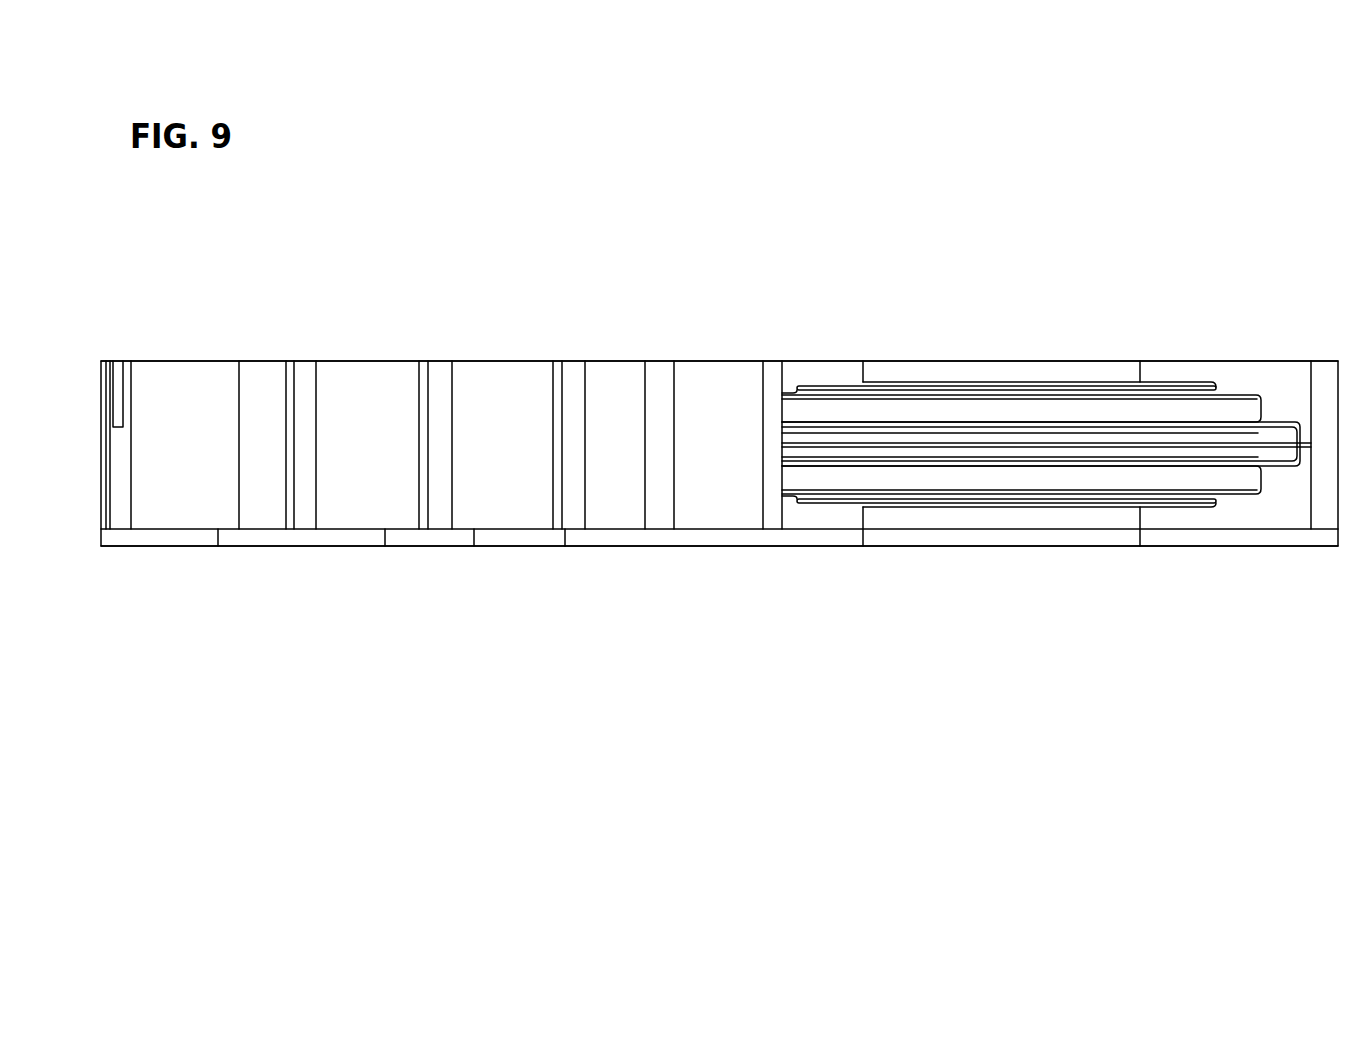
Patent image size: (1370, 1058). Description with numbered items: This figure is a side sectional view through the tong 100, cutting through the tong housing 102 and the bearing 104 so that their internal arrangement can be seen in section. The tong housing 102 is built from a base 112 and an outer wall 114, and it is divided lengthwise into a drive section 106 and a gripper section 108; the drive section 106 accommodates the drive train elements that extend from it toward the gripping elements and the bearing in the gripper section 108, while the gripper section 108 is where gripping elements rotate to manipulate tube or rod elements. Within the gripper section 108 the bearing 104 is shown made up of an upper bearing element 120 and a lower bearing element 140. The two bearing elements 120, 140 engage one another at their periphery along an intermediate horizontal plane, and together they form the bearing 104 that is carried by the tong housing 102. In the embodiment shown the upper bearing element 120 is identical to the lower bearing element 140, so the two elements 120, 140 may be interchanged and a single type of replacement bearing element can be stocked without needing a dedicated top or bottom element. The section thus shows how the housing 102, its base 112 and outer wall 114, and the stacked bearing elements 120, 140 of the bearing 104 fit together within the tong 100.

The tong 100 is at (628, 204).
The tong housing 102 is at (709, 360).
The bearing 104 is at (1228, 381).
The drive section 106 is at (428, 557).
The gripper section 108 is at (1068, 603).
The base 112 is at (502, 537).
The outer wall 114 is at (533, 465).
The upper bearing element 120 is at (1243, 410).
The lower bearing element 140 is at (1245, 478).